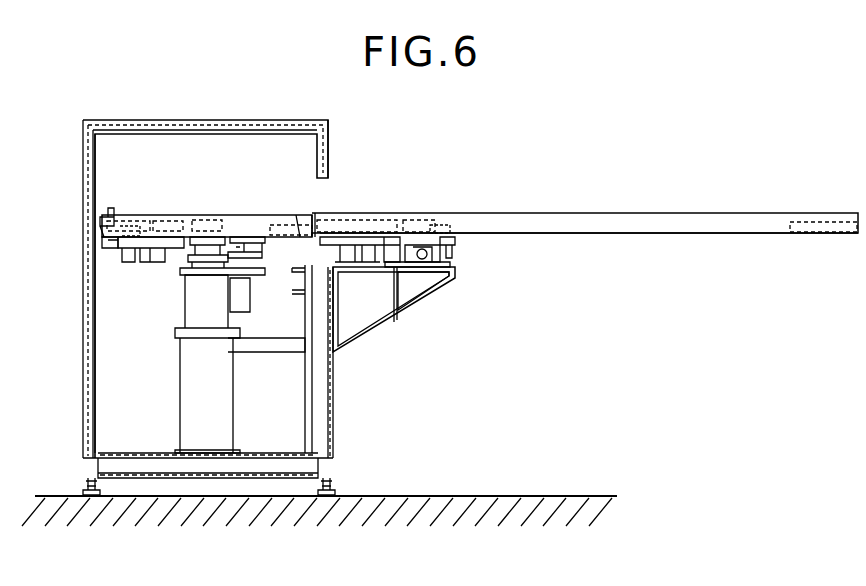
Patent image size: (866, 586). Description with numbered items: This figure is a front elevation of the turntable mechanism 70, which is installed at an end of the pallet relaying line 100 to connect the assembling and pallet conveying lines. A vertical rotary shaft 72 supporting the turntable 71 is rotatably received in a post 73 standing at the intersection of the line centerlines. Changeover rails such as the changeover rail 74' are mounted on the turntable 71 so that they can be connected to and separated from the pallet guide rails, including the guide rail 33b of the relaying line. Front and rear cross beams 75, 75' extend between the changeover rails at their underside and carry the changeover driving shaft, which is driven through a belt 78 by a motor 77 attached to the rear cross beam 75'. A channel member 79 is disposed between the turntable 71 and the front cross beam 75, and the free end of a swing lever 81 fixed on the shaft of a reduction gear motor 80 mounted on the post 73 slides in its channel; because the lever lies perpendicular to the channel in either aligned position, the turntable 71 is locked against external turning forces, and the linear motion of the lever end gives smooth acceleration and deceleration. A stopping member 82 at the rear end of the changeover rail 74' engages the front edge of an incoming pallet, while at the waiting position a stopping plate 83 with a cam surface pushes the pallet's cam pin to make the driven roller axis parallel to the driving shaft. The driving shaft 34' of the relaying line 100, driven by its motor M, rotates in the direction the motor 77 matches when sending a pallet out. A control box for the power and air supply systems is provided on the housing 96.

The housing 96 is at (237, 121).
The turntable mechanism 70 is at (239, 210).
The pallet relaying line 100 is at (622, 213).
The guide rail of the relaying line 33b is at (650, 236).
The belt 78 is at (132, 222).
The changeover rail 74' is at (292, 205).
The driving shaft of the relaying line 34' is at (587, 198).
The stopping plate 83 is at (452, 228).
The stopping member 82 is at (107, 212).
The rear cross beam 75' is at (81, 262).
The motor 77 is at (160, 250).
The turntable 71 is at (200, 252).
The swing lever 81 is at (235, 250).
The vertical rotary shaft 72 is at (210, 255).
The reduction gear motor 80 is at (248, 296).
The post 73 is at (233, 372).
The channel member 79 is at (305, 286).
The front cross beam 75 is at (377, 298).
The motor M is at (423, 291).